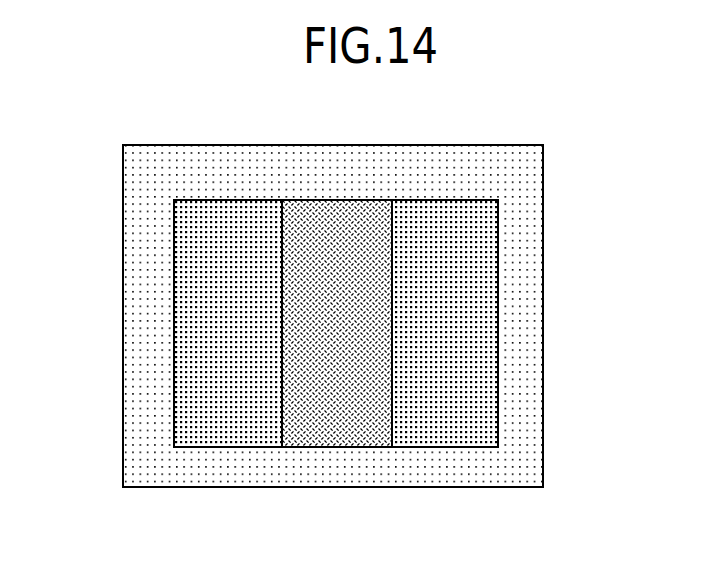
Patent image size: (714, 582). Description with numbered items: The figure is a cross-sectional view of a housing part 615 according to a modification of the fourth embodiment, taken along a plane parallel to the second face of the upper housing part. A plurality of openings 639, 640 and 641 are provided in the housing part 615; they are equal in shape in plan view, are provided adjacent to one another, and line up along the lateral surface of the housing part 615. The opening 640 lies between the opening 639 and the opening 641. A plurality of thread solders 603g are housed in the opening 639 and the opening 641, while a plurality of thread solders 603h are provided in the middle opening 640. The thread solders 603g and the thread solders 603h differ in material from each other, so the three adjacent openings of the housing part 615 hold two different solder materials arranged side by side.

The housing part 615 is at (143, 182).
The thread solders 603g is at (235, 217).
The thread solders 603h is at (333, 217).
The opening 639 is at (233, 447).
The opening 640 is at (340, 447).
The opening 641 is at (443, 447).